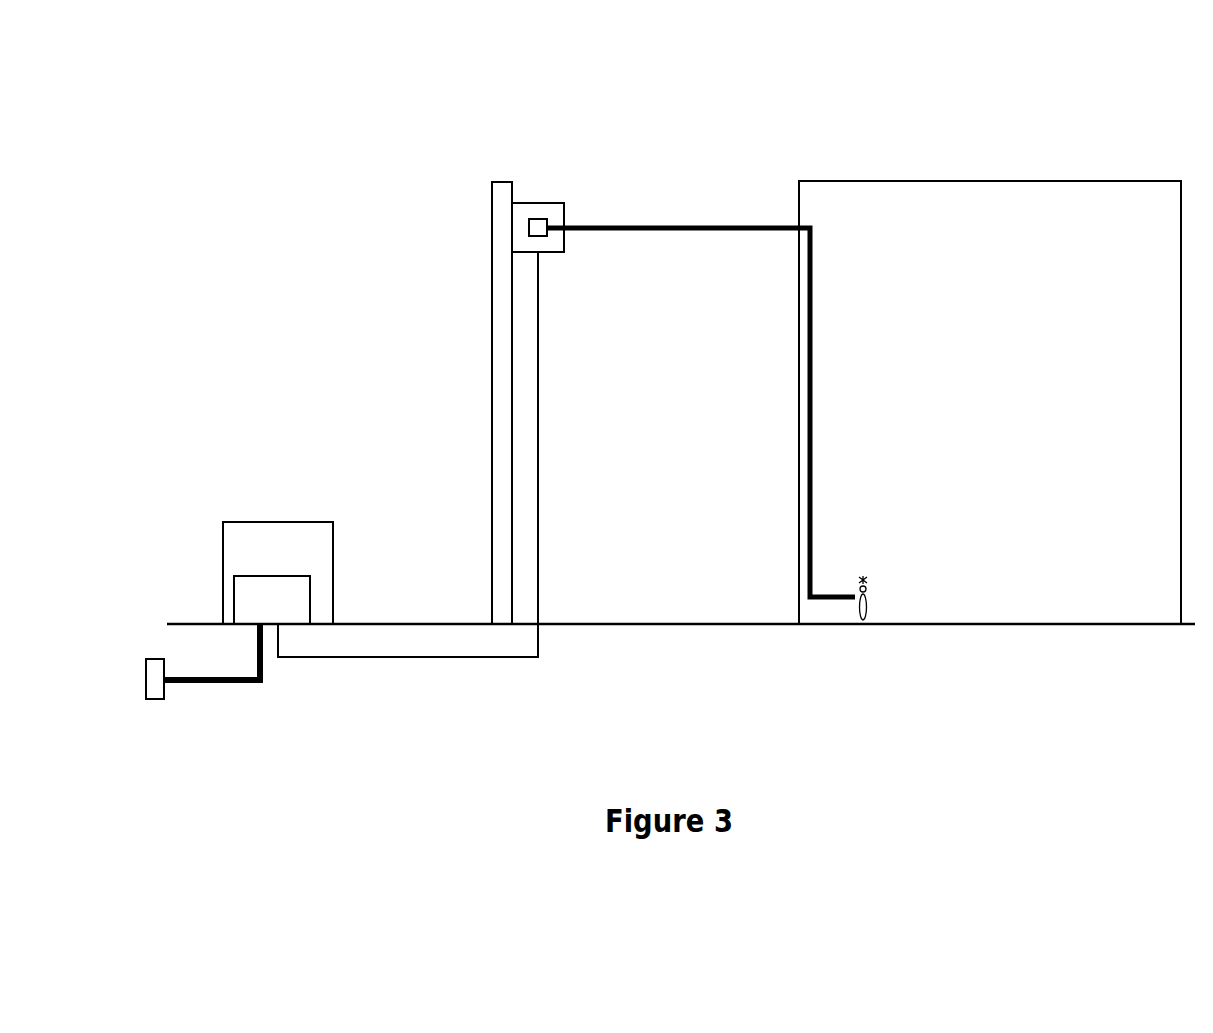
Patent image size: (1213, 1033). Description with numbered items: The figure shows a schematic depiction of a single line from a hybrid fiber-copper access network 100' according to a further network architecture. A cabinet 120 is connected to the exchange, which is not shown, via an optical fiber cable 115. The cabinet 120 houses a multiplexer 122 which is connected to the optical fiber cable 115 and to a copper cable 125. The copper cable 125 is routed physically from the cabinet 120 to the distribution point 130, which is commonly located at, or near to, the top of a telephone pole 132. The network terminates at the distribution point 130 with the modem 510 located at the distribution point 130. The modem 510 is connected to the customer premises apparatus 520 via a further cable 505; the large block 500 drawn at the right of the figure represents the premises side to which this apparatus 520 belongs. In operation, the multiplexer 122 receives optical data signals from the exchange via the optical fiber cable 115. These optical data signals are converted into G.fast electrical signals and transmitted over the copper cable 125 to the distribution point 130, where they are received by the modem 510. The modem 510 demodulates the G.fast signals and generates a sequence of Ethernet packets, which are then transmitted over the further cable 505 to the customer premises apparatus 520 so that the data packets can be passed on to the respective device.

The hybrid fiber-copper access network 100' is at (681, 343).
The optical fiber cable 115 is at (223, 684).
The cabinet 120 is at (278, 521).
The multiplexer 122 is at (268, 575).
The copper cable 125 is at (427, 658).
The distribution point 130 is at (538, 201).
The telephone pole 132 is at (492, 253).
The device 500 is at (998, 180).
The further cable 505 is at (656, 225).
The modem 510 is at (546, 236).
The customer premises apparatus 520 is at (865, 625).